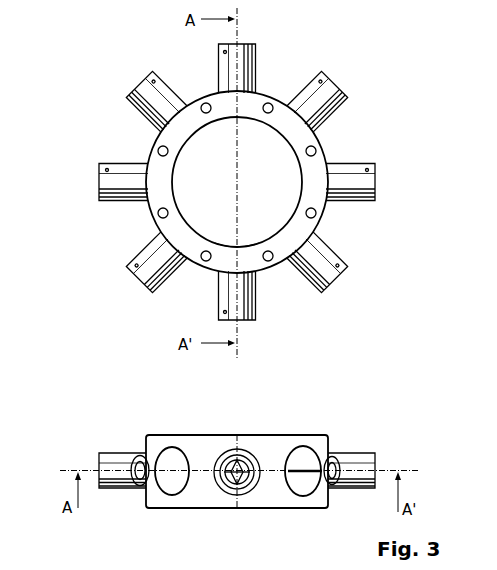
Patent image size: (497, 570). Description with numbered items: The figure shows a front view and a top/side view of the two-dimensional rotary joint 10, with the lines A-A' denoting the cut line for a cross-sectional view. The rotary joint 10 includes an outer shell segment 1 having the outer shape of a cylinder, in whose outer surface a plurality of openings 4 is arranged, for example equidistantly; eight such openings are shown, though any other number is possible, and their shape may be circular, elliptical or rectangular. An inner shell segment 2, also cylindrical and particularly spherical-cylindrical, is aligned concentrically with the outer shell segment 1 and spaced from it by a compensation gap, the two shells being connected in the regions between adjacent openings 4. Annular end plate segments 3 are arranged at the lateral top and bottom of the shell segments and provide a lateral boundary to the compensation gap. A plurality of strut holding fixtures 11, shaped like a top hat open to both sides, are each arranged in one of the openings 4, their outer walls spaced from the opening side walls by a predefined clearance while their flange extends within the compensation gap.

The two-dimensional rotary joint 10 is at (106, 56).
The outer shell segment 1 is at (268, 92).
The inner shell segment 2 is at (248, 241).
The end plate segment 3 is at (172, 184).
The openings 4 is at (300, 436).
The strut holding fixtures 11 is at (152, 78).